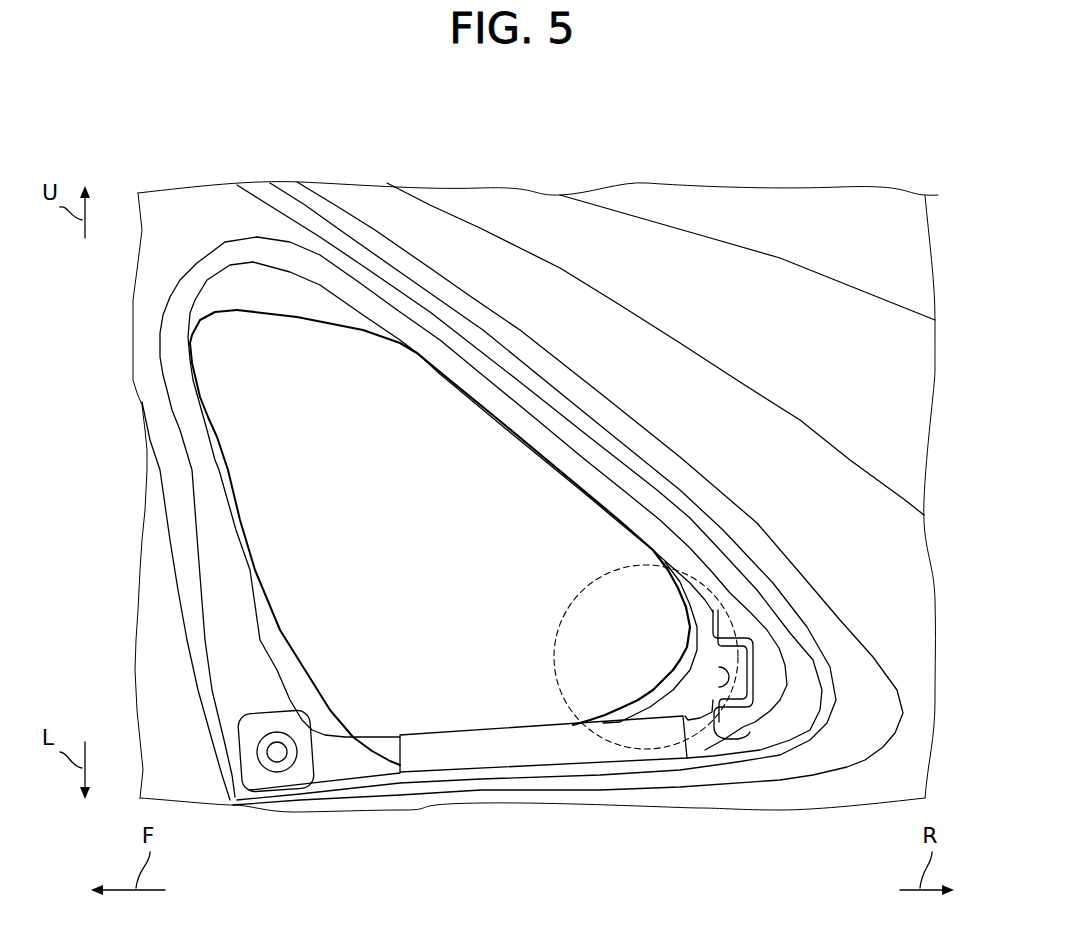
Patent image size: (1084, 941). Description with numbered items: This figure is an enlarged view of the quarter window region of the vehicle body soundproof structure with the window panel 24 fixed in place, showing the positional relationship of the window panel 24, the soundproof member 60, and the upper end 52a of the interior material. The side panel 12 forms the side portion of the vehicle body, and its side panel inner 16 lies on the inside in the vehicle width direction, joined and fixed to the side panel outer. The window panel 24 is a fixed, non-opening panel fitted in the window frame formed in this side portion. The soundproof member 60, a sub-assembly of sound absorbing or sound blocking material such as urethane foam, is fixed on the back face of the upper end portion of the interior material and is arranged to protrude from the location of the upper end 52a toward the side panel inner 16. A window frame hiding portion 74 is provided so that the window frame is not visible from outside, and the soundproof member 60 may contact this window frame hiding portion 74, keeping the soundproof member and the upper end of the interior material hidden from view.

The side panel 12 is at (521, 218).
The side panel inner 16 is at (653, 255).
The window panel 24 is at (472, 497).
The upper end of the interior material 52a is at (643, 690).
The soundproof member 60 is at (528, 748).
The window frame hiding portion 74 is at (700, 738).